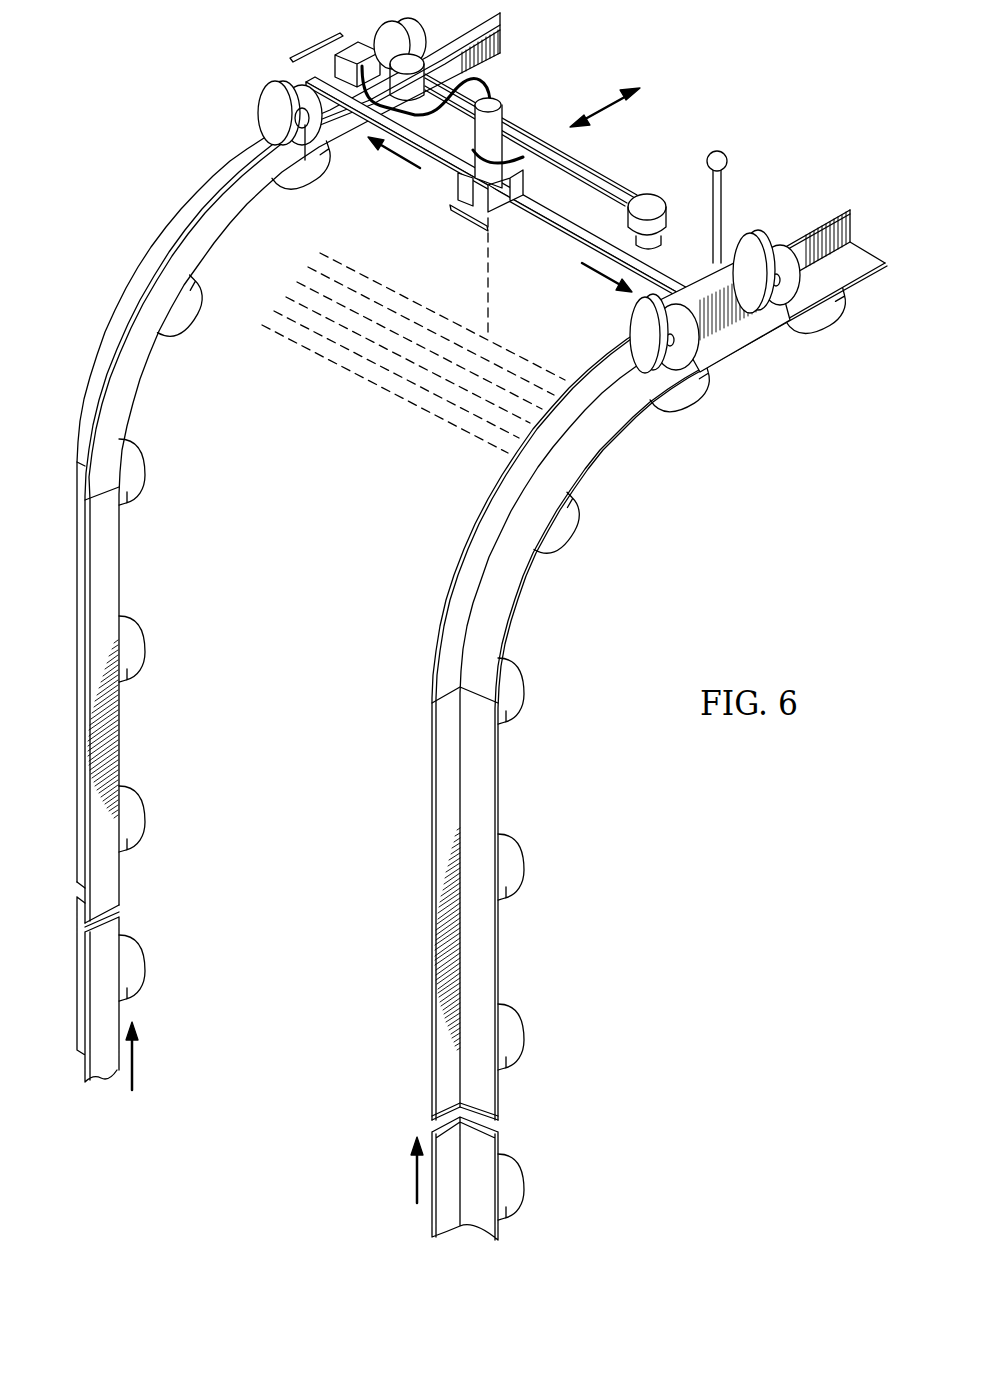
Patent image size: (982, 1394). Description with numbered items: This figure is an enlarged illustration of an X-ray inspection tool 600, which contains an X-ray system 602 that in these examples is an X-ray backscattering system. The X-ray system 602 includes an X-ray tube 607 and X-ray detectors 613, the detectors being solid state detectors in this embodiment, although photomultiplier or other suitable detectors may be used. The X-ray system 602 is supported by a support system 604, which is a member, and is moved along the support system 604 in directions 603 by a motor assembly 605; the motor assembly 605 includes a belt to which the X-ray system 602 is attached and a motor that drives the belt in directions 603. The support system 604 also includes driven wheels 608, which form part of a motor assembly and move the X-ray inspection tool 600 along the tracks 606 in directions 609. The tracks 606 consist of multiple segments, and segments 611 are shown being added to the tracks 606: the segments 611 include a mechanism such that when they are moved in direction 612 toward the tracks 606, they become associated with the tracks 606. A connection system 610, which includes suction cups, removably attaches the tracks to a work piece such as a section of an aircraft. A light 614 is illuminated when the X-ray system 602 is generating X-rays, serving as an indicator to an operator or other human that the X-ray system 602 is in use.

The X-ray inspection tool 600 is at (725, 612).
The X-ray system 602 is at (478, 212).
The directions 603 is at (405, 160).
The support system 604 is at (557, 226).
The motor assembly 605 is at (316, 48).
The tracks 606 is at (150, 251).
The X-ray tube 607 is at (508, 120).
The driven wheels 608 is at (260, 112).
The directions 609 is at (604, 120).
The connection system 610 is at (292, 197).
The segments 611 is at (118, 1088).
The direction 612 is at (136, 1062).
The X-ray detectors 613 is at (450, 190).
The light 614 is at (727, 160).